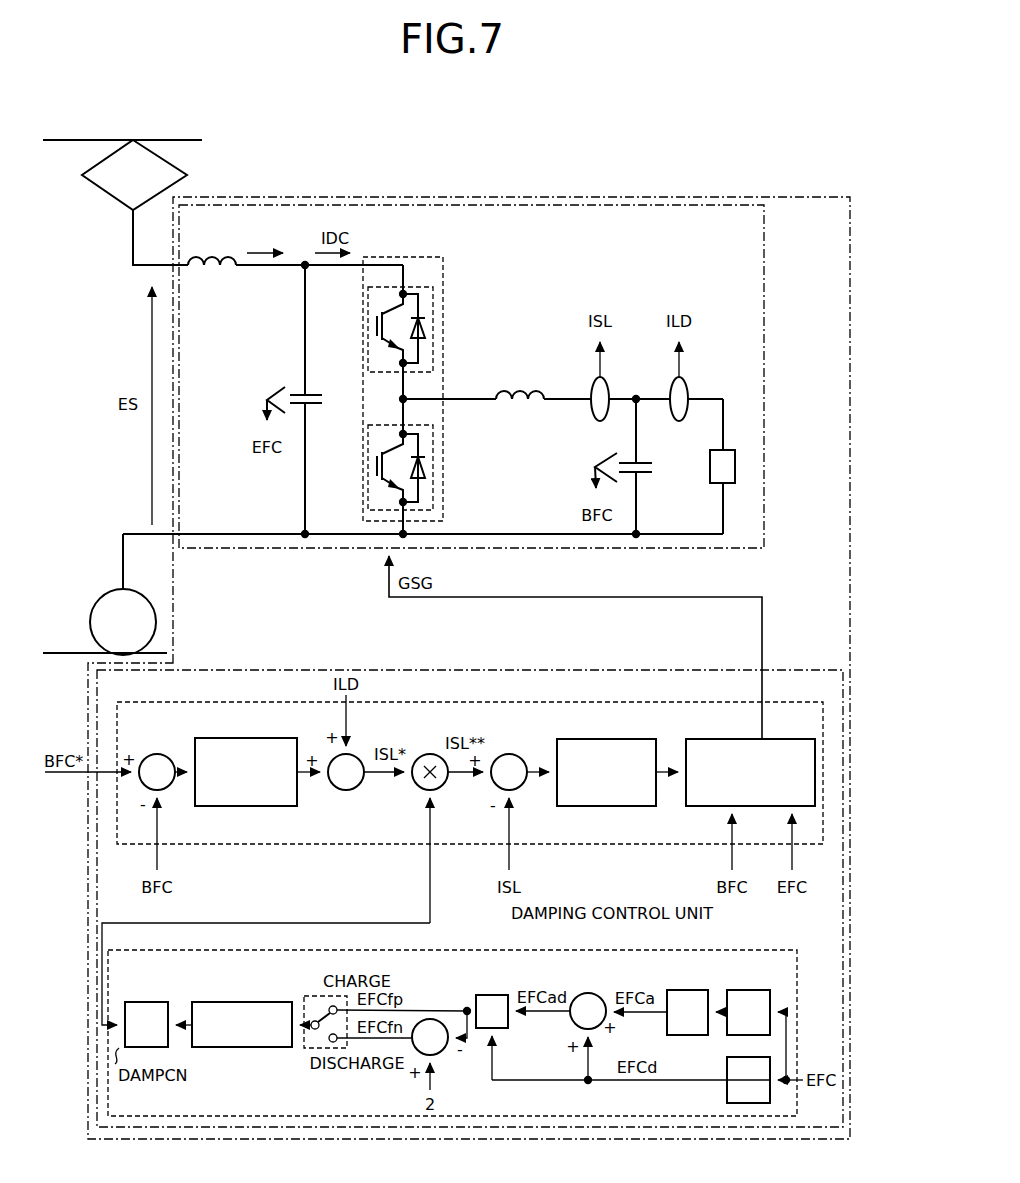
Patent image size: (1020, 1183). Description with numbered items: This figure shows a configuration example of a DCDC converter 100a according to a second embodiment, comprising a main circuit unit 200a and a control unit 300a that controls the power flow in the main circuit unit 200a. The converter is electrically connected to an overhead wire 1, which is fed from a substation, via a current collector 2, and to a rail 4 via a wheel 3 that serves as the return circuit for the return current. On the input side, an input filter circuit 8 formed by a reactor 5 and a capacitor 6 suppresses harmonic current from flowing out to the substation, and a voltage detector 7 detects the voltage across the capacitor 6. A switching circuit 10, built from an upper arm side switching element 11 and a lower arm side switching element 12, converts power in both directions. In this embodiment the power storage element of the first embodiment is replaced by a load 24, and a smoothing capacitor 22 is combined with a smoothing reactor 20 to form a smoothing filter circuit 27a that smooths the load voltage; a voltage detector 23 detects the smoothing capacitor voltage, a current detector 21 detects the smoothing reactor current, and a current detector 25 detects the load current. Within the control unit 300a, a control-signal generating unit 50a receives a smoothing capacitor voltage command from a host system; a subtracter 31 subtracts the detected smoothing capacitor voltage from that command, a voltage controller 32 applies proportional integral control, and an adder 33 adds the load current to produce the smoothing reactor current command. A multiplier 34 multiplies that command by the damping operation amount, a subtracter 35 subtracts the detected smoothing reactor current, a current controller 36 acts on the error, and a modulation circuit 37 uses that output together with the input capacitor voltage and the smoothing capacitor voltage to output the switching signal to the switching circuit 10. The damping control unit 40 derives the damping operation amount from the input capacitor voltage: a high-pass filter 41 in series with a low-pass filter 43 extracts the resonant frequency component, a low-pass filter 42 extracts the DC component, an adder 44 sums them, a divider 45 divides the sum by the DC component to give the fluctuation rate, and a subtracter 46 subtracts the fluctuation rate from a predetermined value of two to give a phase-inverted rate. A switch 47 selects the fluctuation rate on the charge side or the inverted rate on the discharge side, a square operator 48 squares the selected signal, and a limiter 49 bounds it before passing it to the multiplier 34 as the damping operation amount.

The overhead wire 1 is at (190, 138).
The current collector 2 is at (180, 166).
The wheel 3 is at (104, 593).
The rail 4 is at (70, 650).
The reactor 5 is at (208, 270).
The capacitor 6 is at (310, 392).
The voltage detector 7 is at (265, 400).
The input filter circuit 8 is at (303, 250).
The switching circuit 10 is at (428, 256).
The upper arm side switching element 11 is at (434, 300).
The lower arm side switching element 12 is at (434, 442).
The smoothing reactor 20 is at (522, 394).
The current detector 21 is at (612, 386).
The smoothing capacitor 22 is at (644, 460).
The voltage detector 23 is at (592, 466).
The load 24 is at (728, 448).
The current detector 25 is at (691, 386).
The smoothing filter circuit 27a is at (553, 325).
The subtracter 31 is at (157, 753).
The voltage controller 32 is at (273, 738).
The adder 33 is at (355, 790).
The multiplier 34 is at (428, 753).
The subtracter 35 is at (512, 753).
The current controller 36 is at (633, 738).
The modulation circuit 37 is at (791, 738).
The damping control unit 40 is at (497, 949).
The high-pass filter 41 is at (748, 990).
The low-pass filter 42 is at (727, 1063).
The low-pass filter 43 is at (686, 990).
The adder 44 is at (588, 993).
The divider 45 is at (490, 993).
The subtracter 46 is at (444, 1050).
The switch 47 is at (308, 992).
The square operator 48 is at (246, 1002).
The limiter 49 is at (148, 1002).
The control-signal generating unit 50a is at (650, 845).
The DCDC converter 100a is at (763, 196).
The main circuit unit 200a is at (766, 228).
The control unit 300a is at (657, 669).